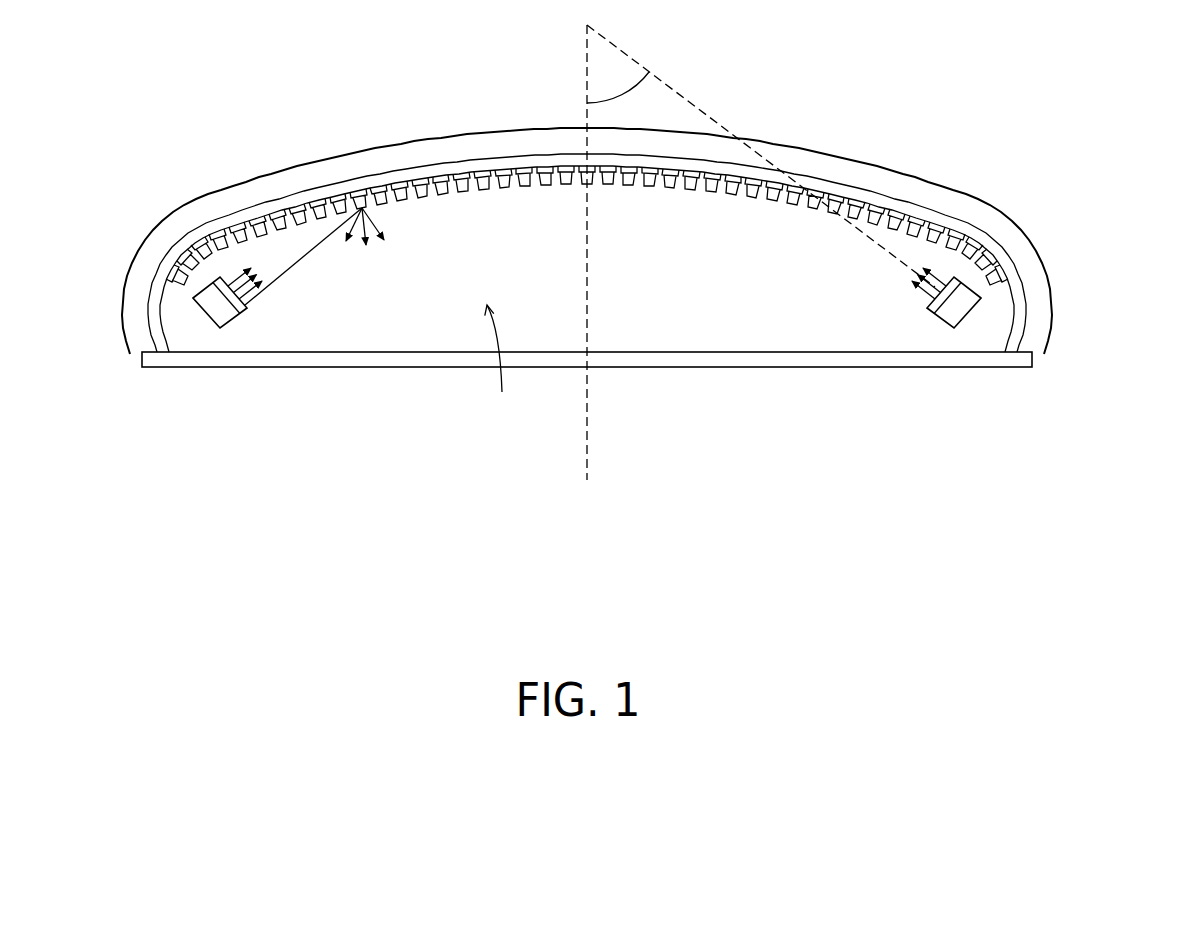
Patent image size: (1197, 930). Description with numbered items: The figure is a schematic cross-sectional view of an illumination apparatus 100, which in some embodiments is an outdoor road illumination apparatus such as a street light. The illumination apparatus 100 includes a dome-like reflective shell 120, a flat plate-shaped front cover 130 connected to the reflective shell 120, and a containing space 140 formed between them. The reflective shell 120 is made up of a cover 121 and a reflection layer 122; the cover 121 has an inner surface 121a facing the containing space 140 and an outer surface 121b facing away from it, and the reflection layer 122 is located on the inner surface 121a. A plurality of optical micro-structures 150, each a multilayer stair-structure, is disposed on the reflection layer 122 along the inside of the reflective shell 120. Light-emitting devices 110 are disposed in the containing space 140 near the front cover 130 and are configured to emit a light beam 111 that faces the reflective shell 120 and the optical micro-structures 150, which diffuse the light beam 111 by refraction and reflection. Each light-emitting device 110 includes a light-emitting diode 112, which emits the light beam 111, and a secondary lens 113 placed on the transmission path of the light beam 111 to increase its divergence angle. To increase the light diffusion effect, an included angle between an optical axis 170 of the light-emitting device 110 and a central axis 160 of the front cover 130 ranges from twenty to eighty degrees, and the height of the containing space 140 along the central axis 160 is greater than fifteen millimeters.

The illumination apparatus 100 is at (1080, 628).
The light-emitting device 110 is at (608, 342).
The light beam 111 is at (283, 275).
The light-emitting diode 112 is at (958, 308).
The secondary lens 113 is at (943, 302).
The reflective shell 120 is at (651, 241).
The cover 121 is at (622, 241).
The inner surface 121a is at (988, 250).
The outer surface 121b is at (1032, 253).
The reflection layer 122 is at (1128, 147).
The front cover 130 is at (395, 361).
The containing space 140 is at (503, 367).
The optical micro-structures 150 is at (349, 192).
The central axis 160 is at (585, 88).
The optical axis 170 is at (703, 110).